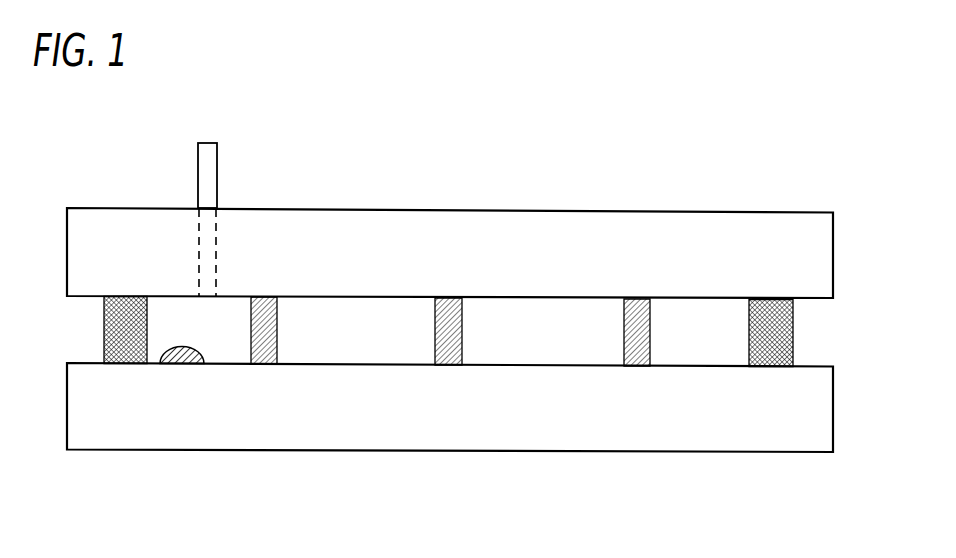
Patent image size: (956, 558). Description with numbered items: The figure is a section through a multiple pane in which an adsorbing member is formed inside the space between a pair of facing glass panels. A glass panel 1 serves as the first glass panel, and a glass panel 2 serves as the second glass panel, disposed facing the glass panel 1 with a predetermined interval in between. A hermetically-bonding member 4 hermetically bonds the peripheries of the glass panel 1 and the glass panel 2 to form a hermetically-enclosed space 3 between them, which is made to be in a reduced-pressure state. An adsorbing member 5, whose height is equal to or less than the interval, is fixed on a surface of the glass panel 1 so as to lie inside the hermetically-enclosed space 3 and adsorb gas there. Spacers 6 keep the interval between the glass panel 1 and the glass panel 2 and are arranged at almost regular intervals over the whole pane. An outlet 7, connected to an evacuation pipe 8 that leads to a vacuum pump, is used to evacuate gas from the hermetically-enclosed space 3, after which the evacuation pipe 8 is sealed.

The glass panel 1 is at (697, 407).
The glass panel 2 is at (622, 243).
The hermetically-enclosed space 3 is at (522, 345).
The hermetically-bonding member 4 is at (118, 328).
The adsorbing member 5 is at (178, 364).
The spacers 6 is at (263, 353).
The outlet 7 is at (212, 227).
The evacuation pipe 8 is at (210, 162).